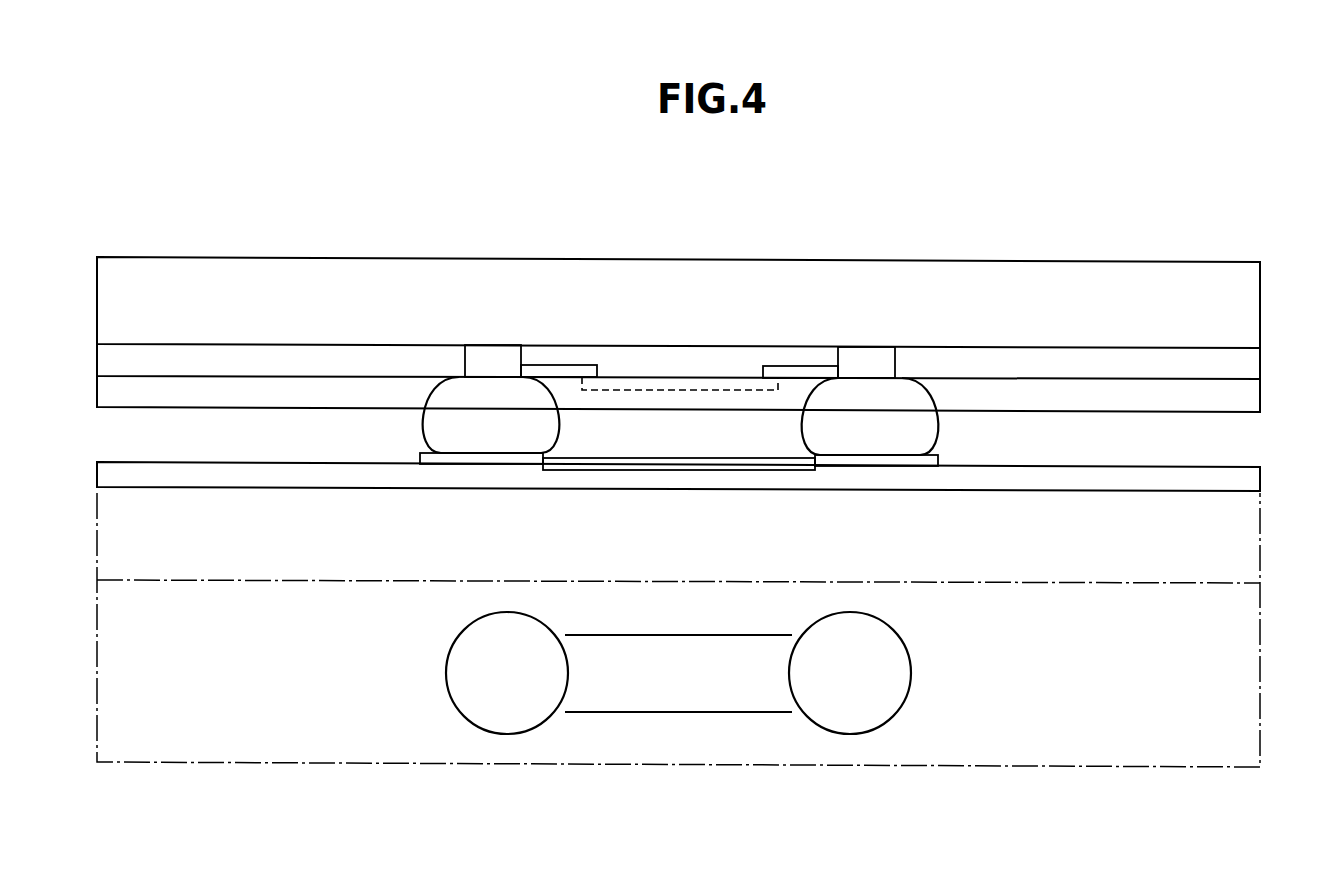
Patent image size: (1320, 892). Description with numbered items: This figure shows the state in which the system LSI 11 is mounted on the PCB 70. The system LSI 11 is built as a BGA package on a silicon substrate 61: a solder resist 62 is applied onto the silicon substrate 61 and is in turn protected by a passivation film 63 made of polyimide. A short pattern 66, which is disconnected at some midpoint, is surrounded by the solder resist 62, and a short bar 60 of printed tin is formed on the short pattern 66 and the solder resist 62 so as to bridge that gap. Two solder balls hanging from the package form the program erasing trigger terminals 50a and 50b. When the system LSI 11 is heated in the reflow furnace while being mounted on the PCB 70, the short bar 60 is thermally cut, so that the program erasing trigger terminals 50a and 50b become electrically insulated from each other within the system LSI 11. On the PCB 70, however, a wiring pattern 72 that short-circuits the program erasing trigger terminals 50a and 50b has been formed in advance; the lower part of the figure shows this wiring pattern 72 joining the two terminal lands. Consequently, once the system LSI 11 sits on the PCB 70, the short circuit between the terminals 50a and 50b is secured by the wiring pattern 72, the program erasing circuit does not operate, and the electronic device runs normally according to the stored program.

The system LSI 11 is at (1092, 221).
The program erasing trigger terminal 50a is at (920, 421).
The program erasing trigger terminal 50b is at (430, 420).
The short bar 60 is at (677, 380).
The silicon substrate 61 is at (1240, 307).
The solder resist 62 is at (1240, 365).
The passivation film 63 is at (1240, 397).
The short pattern 66 is at (553, 372).
The PCB 70 is at (1093, 493).
The wiring pattern 72 is at (657, 463).